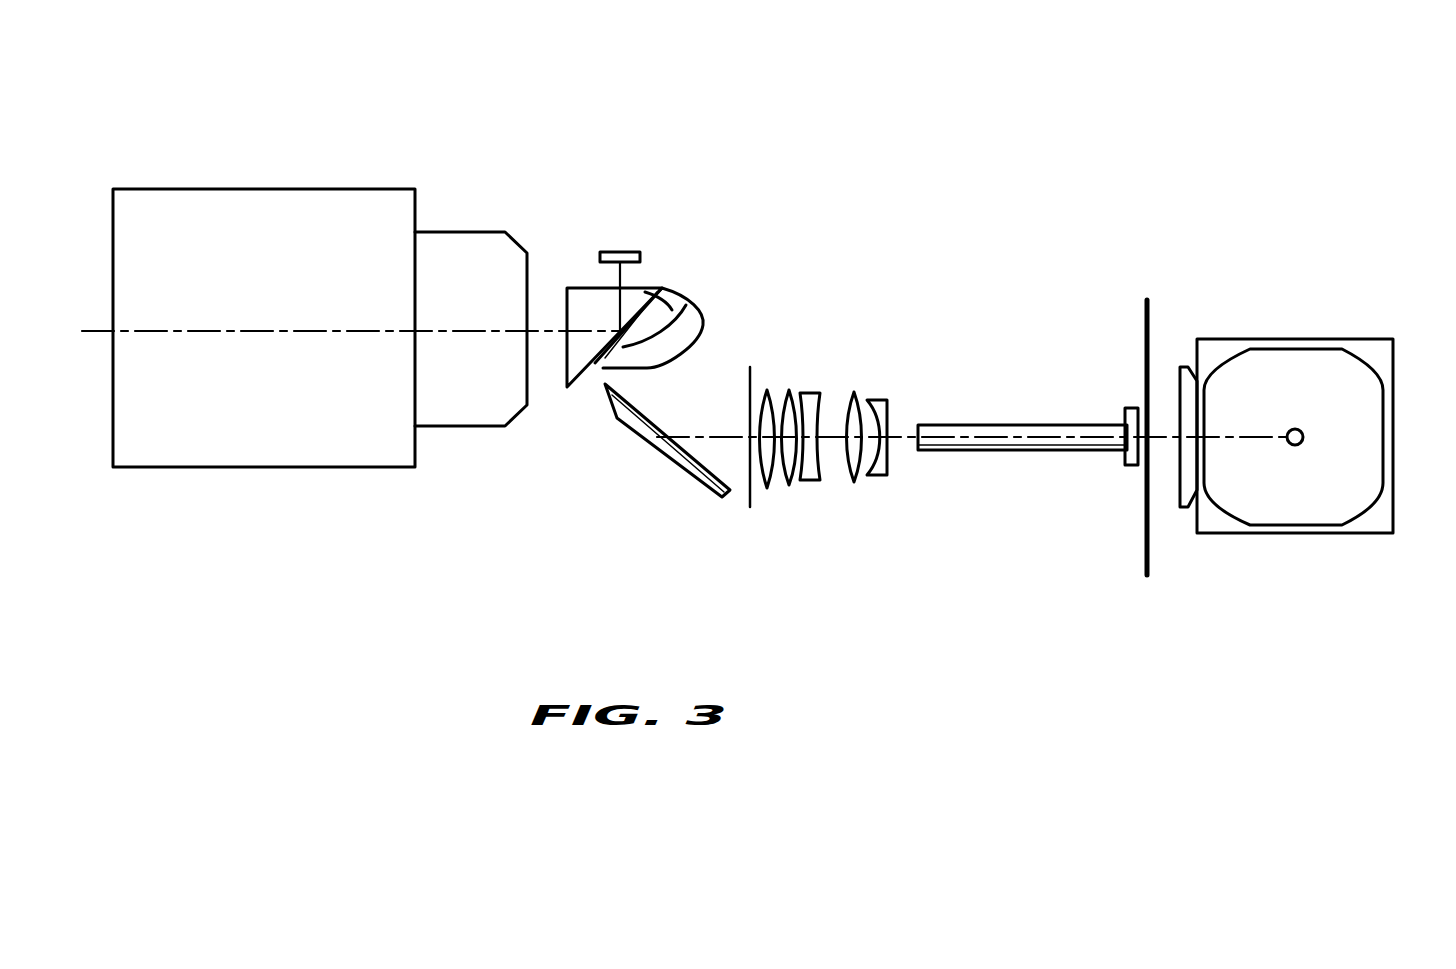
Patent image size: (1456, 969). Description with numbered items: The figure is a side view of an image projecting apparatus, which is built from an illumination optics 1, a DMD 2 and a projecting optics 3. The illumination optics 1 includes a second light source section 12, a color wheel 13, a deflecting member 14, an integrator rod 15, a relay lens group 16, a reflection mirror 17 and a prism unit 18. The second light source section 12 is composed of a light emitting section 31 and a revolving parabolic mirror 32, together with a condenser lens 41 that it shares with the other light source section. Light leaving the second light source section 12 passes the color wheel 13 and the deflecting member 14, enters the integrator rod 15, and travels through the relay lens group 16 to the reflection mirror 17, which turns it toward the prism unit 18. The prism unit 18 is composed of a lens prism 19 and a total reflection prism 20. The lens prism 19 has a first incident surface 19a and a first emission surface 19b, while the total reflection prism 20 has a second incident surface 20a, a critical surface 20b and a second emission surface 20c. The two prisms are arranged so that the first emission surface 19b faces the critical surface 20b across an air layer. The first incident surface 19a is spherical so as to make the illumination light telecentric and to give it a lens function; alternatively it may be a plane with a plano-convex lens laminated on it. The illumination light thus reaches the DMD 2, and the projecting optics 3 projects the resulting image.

The illumination optics 1 is at (946, 183).
The DMD 2 is at (620, 251).
The projecting optics 3 is at (247, 188).
The second light source section 12 is at (1412, 272).
The color wheel 13 is at (1145, 340).
The deflecting member 14 is at (1124, 410).
The integrator rod 15 is at (1031, 451).
The relay lens group 16 is at (897, 528).
The reflection mirror 17 is at (660, 450).
The prism unit 18 is at (736, 235).
The lens prism 19 is at (713, 341).
The first incident surface 19a is at (655, 360).
The first emission surface 19b is at (678, 293).
The total reflection prism 20 is at (566, 400).
The second incident surface 20a is at (588, 286).
The critical surface 20b is at (643, 283).
The second emission surface 20c is at (562, 305).
The light emitting section 31 is at (1295, 446).
The revolving parabolic mirror 32 is at (1348, 503).
The condenser lens 41 is at (1185, 365).